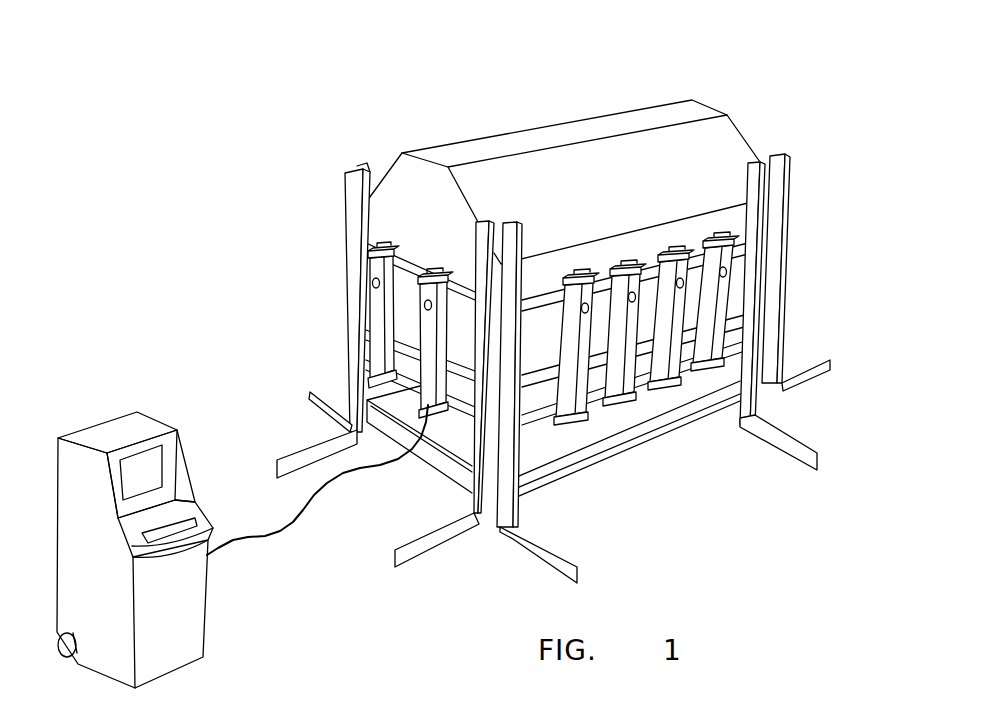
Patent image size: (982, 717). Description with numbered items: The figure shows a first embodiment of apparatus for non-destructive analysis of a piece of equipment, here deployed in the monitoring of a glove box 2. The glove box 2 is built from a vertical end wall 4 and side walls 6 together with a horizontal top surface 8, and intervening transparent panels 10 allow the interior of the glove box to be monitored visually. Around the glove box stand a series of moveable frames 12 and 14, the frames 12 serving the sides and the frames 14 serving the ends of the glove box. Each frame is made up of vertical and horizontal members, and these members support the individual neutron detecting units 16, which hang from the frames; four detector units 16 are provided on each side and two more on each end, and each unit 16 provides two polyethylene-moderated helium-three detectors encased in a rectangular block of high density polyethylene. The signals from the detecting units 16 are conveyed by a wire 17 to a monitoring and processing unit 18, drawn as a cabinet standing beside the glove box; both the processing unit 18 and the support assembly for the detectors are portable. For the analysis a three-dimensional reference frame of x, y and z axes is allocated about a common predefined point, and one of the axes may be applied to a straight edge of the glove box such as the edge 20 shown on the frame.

The glove box 2 is at (560, 118).
The vertical end wall 4 is at (413, 218).
The side walls 6 is at (720, 222).
The horizontal top surface 8 is at (640, 110).
The transparent panels 10 is at (665, 175).
The moveable frames 12 is at (640, 440).
The moveable frames 14 is at (437, 463).
The neutron detecting units 16 is at (428, 337).
The wire 17 is at (278, 535).
The monitoring and processing unit 18 is at (222, 623).
The edge 20 is at (367, 226).